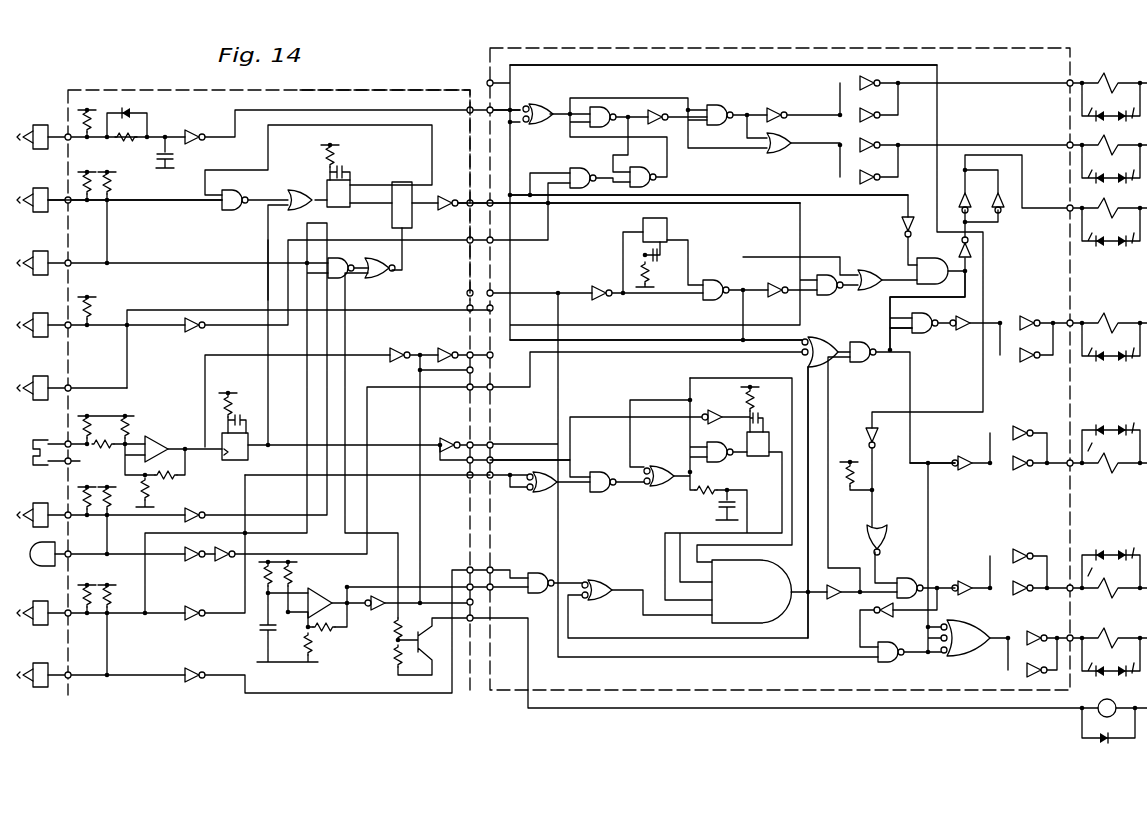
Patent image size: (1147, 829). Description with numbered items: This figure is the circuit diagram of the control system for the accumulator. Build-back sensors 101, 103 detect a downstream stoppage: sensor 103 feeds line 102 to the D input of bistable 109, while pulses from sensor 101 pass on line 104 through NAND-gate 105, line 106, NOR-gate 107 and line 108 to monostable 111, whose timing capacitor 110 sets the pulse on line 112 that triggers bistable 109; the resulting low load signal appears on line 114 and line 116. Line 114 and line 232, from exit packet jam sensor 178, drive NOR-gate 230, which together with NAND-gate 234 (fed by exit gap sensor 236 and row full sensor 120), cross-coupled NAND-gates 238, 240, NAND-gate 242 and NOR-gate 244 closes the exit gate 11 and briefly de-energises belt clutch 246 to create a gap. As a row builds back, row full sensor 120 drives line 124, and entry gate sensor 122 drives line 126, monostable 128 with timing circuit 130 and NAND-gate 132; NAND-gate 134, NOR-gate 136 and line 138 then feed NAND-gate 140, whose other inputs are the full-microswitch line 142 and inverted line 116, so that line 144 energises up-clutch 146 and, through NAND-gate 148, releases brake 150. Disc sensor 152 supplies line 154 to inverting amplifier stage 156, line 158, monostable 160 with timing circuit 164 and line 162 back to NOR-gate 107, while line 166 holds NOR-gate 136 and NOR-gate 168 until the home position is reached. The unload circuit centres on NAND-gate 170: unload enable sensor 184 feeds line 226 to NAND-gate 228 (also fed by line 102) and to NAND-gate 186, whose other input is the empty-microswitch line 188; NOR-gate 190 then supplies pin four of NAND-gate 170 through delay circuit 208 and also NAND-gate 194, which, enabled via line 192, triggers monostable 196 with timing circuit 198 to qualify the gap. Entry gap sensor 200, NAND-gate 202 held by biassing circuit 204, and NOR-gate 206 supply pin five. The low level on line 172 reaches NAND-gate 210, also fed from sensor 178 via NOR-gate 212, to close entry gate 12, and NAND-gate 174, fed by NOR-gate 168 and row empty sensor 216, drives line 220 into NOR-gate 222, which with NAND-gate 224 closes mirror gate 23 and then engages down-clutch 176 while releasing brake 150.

The exit gate 11 is at (1122, 94).
The entry gate 12 is at (1120, 558).
The mirror gate 23 is at (1124, 640).
The build-back sensor 101 is at (42, 185).
The line 102 is at (256, 266).
The build-back sensor 103 is at (42, 248).
The line 104 is at (192, 204).
The NAND-gate 105 is at (242, 210).
The line 106 is at (285, 192).
The NOR-gate 107 is at (304, 190).
The line 108 is at (316, 208).
The bistable 109 is at (404, 185).
The timing capacitor 110 is at (343, 168).
The monostable 111 is at (350, 202).
The line 112 is at (375, 176).
The line 114 is at (492, 200).
The line 116 is at (868, 198).
The row full sensor 120 is at (56, 300).
The entry gate sensor 122 is at (42, 500).
The line 124 is at (612, 206).
The line 126 is at (612, 290).
The monostable 128 is at (667, 226).
The timing circuit 130 is at (657, 282).
The NAND-gate 132 is at (722, 282).
The NAND-gate 134 is at (828, 297).
The NOR-gate 136 is at (880, 272).
The line 138 is at (930, 318).
The NAND-gate 140 is at (940, 268).
The line 142 is at (492, 78).
The line 144 is at (968, 280).
The up-clutch 146 is at (1132, 243).
The NAND-gate 148 is at (906, 327).
The brake 150 is at (1140, 303).
The disc sensor 152 is at (50, 425).
The line 154 is at (76, 444).
The inverting amplifier stage 156 is at (190, 426).
The line 158 is at (205, 370).
The monostable 160 is at (228, 462).
The line 162 is at (266, 248).
The timing circuit 164 is at (235, 406).
The line 166 is at (790, 336).
The NOR-gate 168 is at (804, 364).
The NAND-gate 170 is at (696, 580).
The line 172 is at (810, 540).
The NAND-gate 174 is at (862, 364).
The down-clutch 176 is at (1110, 434).
The exit packet jam sensor 178 is at (40, 125).
The unload enable sensor 184 is at (40, 625).
The NAND-gate 186 is at (598, 493).
The line 188 is at (572, 466).
The NOR-gate 190 is at (654, 488).
The line 192 is at (696, 378).
The NAND-gate 194 is at (706, 441).
The monostable 196 is at (757, 457).
The timing circuit 198 is at (780, 406).
The entry gap sensor 200 is at (48, 687).
The NAND-gate 202 is at (546, 572).
The biassing circuit 204 is at (330, 637).
The NOR-gate 206 is at (600, 578).
The delay circuit 208 is at (720, 496).
The NAND-gate 210 is at (918, 578).
The NOR-gate 212 is at (886, 533).
The row empty sensor 216 is at (48, 566).
The line 220 is at (928, 520).
The NOR-gate 222 is at (968, 630).
The NAND-gate 224 is at (890, 663).
The line 226 is at (145, 592).
The NAND-gate 228 is at (345, 262).
The NOR-gate 230 is at (548, 125).
The line 232 is at (437, 106).
The NAND-gate 234 is at (588, 156).
The exit gap sensor 236 is at (54, 362).
The NAND-gate 238 is at (657, 181).
The NAND-gate 240 is at (595, 108).
The NAND-gate 242 is at (720, 92).
The NOR-gate 244 is at (788, 152).
The belt clutch 246 is at (1068, 146).